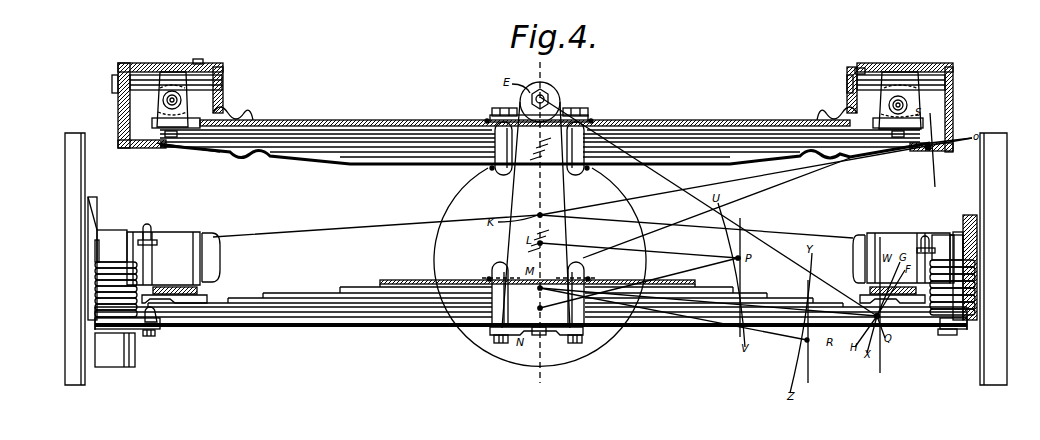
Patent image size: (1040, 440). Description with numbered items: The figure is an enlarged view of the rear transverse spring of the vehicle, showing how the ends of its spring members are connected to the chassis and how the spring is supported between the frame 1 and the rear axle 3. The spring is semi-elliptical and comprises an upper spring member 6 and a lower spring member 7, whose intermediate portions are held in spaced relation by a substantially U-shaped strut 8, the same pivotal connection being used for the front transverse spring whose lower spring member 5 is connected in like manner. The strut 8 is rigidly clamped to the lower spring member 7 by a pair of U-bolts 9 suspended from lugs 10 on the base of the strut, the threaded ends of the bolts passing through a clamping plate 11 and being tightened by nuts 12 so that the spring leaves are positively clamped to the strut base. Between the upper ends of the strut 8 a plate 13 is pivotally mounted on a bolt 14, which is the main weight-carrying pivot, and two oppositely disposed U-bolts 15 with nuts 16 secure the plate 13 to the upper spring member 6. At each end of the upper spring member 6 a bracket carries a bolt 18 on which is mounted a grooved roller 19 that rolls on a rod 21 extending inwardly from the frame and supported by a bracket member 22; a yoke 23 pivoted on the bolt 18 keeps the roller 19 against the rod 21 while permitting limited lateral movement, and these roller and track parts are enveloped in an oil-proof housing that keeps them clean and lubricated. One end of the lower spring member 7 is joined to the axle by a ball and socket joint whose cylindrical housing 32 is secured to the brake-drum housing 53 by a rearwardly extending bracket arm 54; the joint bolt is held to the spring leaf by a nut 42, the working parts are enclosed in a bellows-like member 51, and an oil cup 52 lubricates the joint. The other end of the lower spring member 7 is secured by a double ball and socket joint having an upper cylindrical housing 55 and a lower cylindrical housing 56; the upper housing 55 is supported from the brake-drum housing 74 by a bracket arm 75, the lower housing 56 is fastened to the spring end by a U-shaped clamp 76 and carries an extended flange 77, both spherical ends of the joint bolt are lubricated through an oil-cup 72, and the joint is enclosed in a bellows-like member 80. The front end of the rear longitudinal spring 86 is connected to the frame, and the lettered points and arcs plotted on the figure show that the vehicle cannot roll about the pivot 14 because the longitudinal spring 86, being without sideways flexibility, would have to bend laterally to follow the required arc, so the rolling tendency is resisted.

The frame 1 is at (118, 106).
The rear axle 3 is at (777, 236).
The lower spring member 5 is at (541, 224).
The upper spring member 6 is at (690, 122).
The lower spring member 7 is at (705, 322).
The strut 8 is at (556, 223).
The U-bolts 9 is at (500, 305).
The lugs 10 is at (489, 277).
The clamping plate 11 is at (545, 345).
The nuts 12 is at (500, 345).
The plate 13 is at (558, 106).
The bolt 14 is at (545, 98).
The U-bolts 15 is at (503, 172).
The nuts 16 is at (505, 112).
The bolt 18 is at (951, 95).
The roller 19 is at (192, 104).
The rod 21 is at (210, 82).
The bracket member 22 is at (213, 71).
The yoke 23 is at (173, 78).
The cylindrical housing 32 is at (977, 245).
The nut 42 is at (948, 336).
The bellows-like member 51 is at (975, 290).
The oil cup 52 is at (963, 255).
The brake-drum housing 53 is at (975, 235).
The bracket arm 54 is at (968, 240).
The upper cylindrical housing 55 is at (97, 245).
The lower cylindrical housing 56 is at (128, 362).
The oil-cup 72 is at (152, 242).
The brake-drum housing 74 is at (98, 232).
The bracket arm 75 is at (106, 240).
The U-shaped clamp 76 is at (158, 318).
The flange 77 is at (140, 340).
The bellows-like member 80 is at (95, 285).
The rear longitudinal spring 86 is at (175, 300).